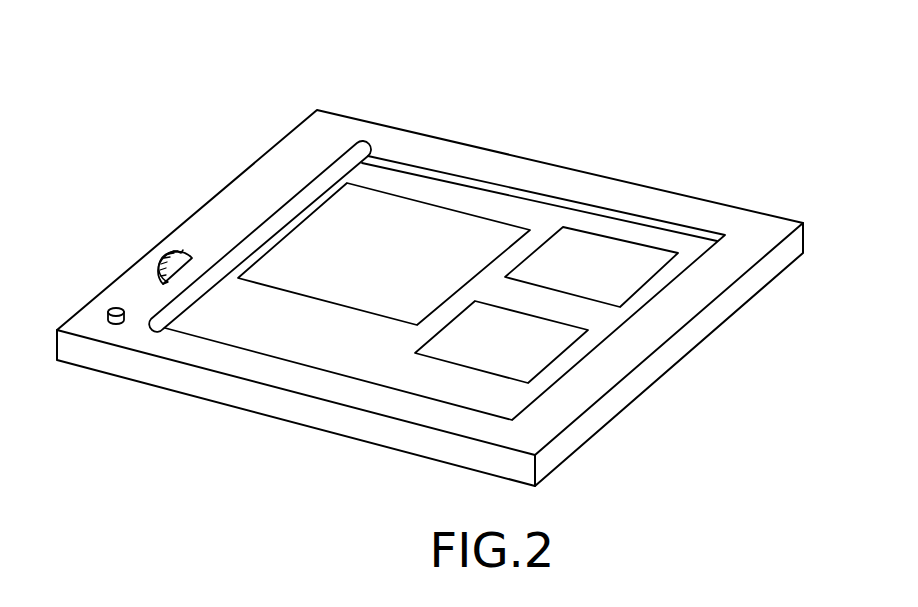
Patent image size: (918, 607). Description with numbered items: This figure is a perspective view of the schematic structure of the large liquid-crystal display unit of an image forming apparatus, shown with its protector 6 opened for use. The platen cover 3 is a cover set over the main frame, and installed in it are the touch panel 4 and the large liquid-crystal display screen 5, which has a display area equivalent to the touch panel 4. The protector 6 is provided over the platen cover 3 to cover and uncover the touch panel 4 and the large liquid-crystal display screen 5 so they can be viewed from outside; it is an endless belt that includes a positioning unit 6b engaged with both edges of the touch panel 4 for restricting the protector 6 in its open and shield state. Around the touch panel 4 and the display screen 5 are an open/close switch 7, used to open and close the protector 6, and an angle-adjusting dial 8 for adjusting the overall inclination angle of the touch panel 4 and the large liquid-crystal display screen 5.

The platen cover 3 is at (748, 230).
The touch panel 4 is at (478, 245).
The large liquid-crystal display screen 5 is at (510, 342).
The protector 6 is at (256, 92).
The positioning unit 6b is at (300, 195).
The open/close switch 7 is at (115, 308).
The angle-adjusting dial 8 is at (160, 265).